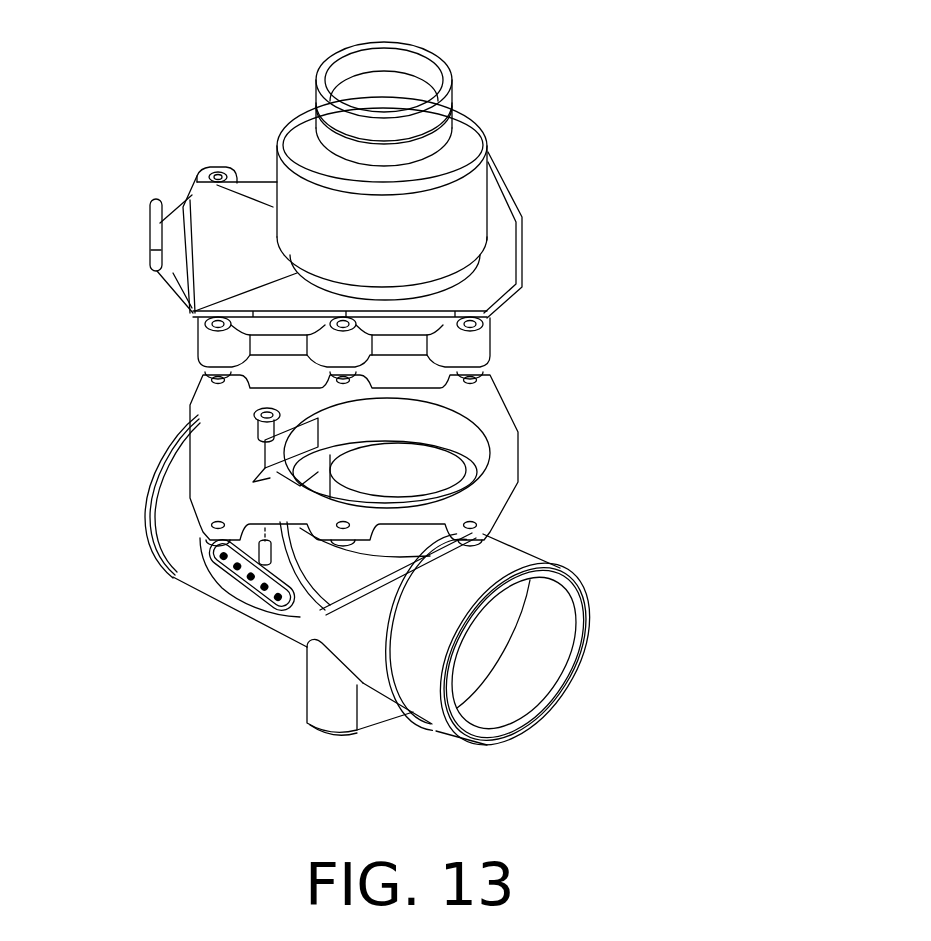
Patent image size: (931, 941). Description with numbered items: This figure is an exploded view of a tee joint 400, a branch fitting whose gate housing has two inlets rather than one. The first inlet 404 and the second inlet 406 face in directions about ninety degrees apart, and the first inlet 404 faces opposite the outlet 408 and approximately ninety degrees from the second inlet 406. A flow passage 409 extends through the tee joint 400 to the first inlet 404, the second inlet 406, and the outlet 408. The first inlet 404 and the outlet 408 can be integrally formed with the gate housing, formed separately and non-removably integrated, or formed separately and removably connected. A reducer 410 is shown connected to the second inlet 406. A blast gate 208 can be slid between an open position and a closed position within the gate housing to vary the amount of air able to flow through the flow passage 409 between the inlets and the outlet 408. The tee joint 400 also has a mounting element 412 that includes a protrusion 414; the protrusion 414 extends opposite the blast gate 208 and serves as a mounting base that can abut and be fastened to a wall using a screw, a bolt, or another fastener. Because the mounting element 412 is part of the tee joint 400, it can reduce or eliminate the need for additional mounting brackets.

The blast gate 208 is at (173, 273).
The tee joint 400 is at (667, 282).
The first inlet 404 is at (580, 692).
The second inlet 406 is at (380, 29).
The outlet 408 is at (136, 476).
The flow passage 409 is at (382, 86).
The reducer 410 is at (433, 142).
The mounting element 412 is at (380, 757).
The protrusion 414 is at (323, 700).